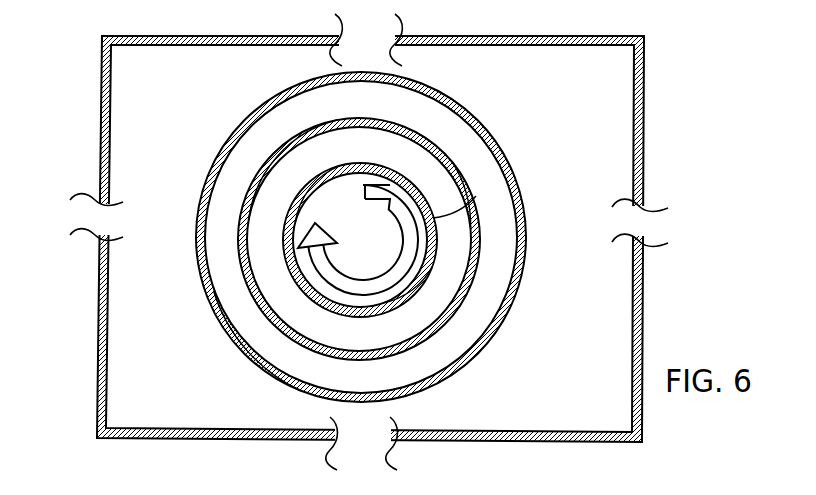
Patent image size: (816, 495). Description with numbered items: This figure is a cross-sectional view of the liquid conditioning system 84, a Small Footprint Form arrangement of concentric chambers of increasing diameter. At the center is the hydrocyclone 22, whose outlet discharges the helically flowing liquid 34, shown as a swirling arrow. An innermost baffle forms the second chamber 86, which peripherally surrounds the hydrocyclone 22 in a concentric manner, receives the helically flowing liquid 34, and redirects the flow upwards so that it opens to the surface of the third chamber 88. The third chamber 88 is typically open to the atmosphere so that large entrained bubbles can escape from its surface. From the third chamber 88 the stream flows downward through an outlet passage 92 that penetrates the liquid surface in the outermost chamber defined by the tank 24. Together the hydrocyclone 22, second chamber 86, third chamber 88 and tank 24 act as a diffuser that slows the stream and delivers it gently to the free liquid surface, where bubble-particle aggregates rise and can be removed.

The tank 24 is at (467, 35).
The liquid conditioning system 84 is at (90, 348).
The helically flowing liquid 34 is at (390, 197).
The hydrocyclone 22 is at (432, 218).
The second chamber 86 is at (483, 258).
The third chamber 88 is at (505, 317).
The outlet passage 92 is at (494, 298).